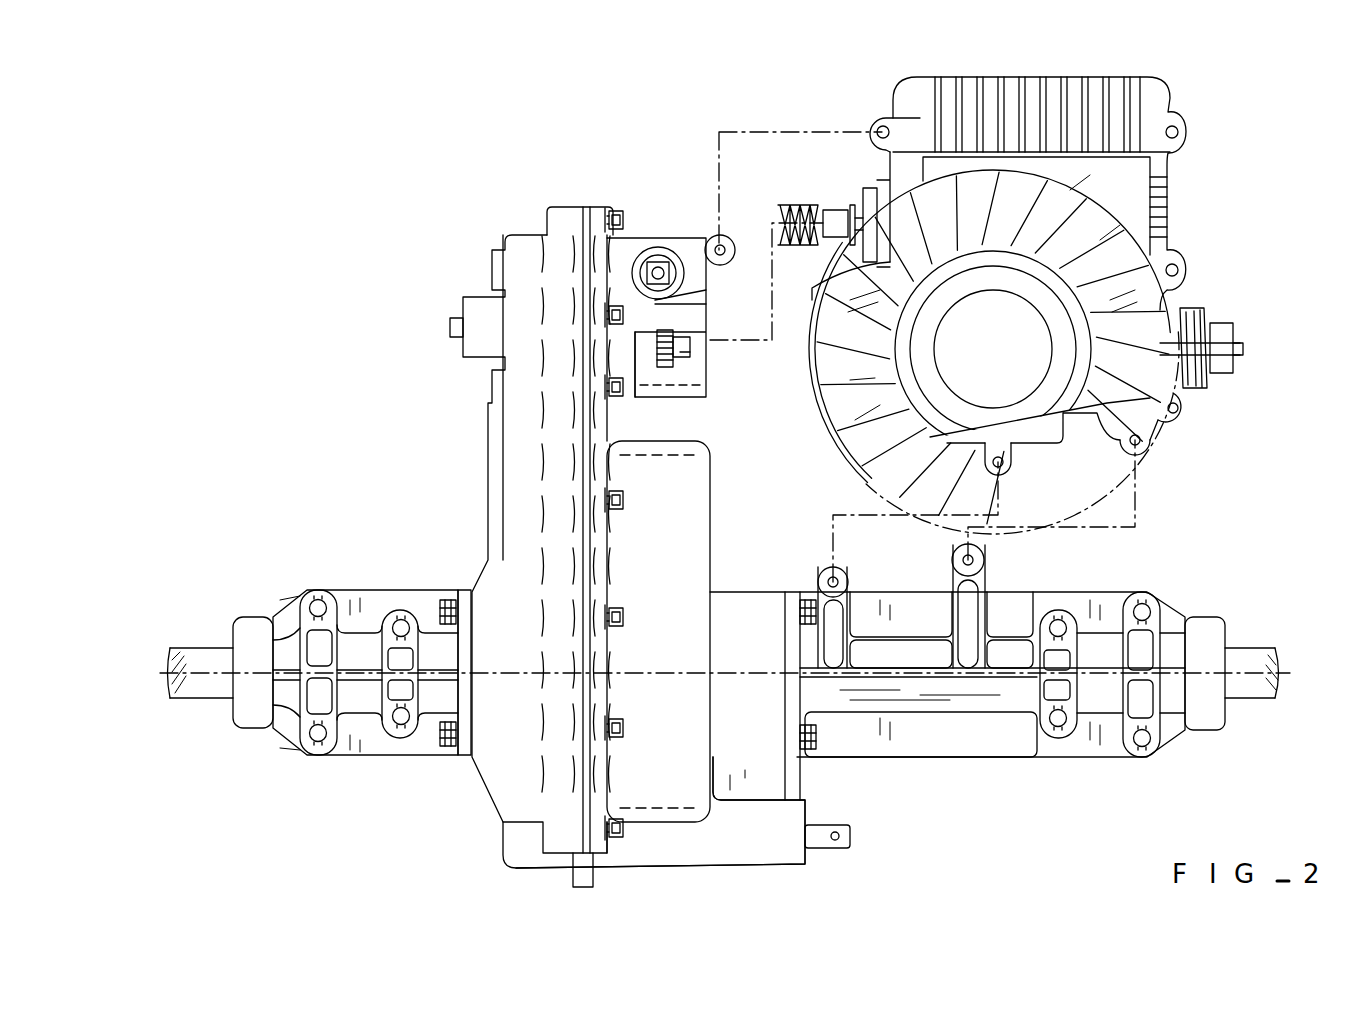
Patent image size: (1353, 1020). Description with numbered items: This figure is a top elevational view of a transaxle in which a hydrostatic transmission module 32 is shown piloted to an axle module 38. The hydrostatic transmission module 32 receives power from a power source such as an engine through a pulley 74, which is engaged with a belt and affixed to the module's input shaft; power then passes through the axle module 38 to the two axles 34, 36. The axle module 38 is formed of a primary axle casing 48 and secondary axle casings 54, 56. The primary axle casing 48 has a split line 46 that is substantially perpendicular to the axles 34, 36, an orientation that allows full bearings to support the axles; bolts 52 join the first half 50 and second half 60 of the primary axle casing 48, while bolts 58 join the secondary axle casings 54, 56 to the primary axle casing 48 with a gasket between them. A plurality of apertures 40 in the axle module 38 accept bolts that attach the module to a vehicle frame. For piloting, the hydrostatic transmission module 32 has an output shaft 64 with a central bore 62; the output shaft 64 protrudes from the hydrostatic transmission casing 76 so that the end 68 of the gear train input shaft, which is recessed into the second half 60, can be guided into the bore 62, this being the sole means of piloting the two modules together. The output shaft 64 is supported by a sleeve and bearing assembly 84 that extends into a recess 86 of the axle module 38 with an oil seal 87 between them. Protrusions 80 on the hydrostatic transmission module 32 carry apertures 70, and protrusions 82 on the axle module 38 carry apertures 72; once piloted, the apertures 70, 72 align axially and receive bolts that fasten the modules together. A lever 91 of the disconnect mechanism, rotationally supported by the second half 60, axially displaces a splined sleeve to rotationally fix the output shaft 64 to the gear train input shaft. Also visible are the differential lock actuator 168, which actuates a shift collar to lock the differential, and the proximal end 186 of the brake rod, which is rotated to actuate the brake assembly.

The hydrostatic transmission module 32 is at (1235, 155).
The axle 34 is at (212, 658).
The axle 36 is at (1243, 660).
The axle module 38 is at (466, 182).
The apertures 40 is at (318, 600).
The split line 46 is at (590, 214).
The primary axle casing 48 is at (580, 186).
The first half 50 is at (506, 856).
The bolts 52 is at (624, 216).
The secondary axle casing 54 is at (362, 768).
The secondary axle casing 56 is at (917, 770).
The bolts 58 is at (448, 598).
The second half 60 is at (722, 852).
The central bore 62 is at (830, 247).
The output shaft 64 is at (838, 212).
The end 68 is at (690, 352).
The apertures 70 is at (881, 126).
The apertures 72 is at (724, 246).
The pulley 74 is at (1185, 305).
The hydrostatic transmission casing 76 is at (1170, 105).
The protrusions 80 is at (872, 140).
The protrusions 82 is at (732, 262).
The sleeve and bearing assembly 84 is at (822, 286).
The recess 86 is at (712, 386).
The oil seal 87 is at (706, 300).
The lever 91 is at (660, 268).
The differential lock actuator 168 is at (832, 848).
The proximal end 186 is at (445, 340).